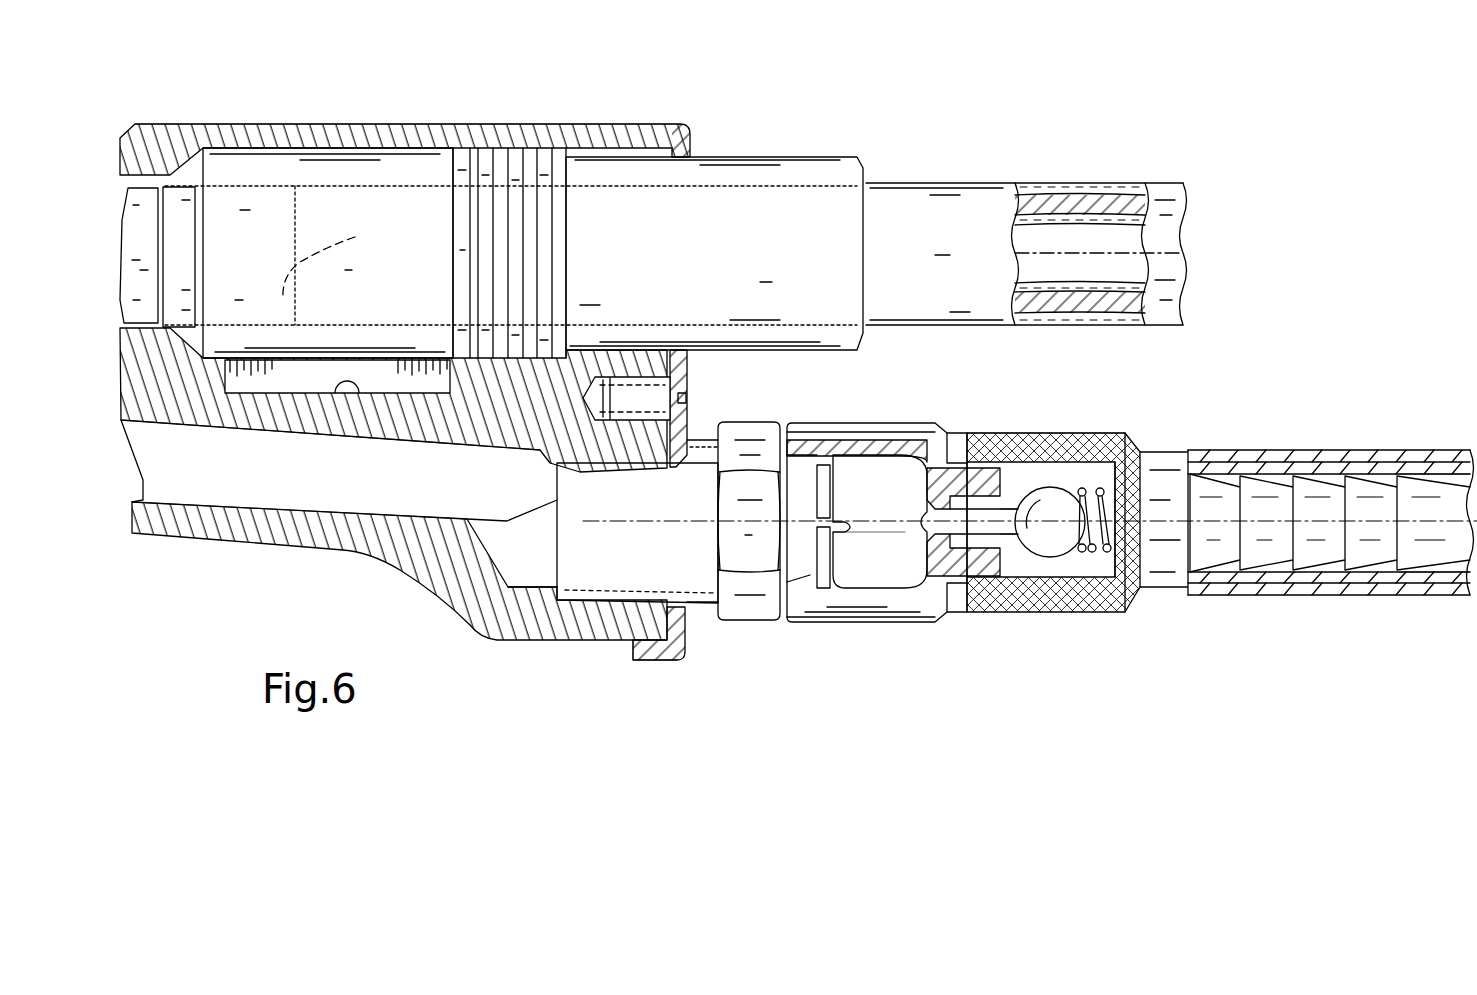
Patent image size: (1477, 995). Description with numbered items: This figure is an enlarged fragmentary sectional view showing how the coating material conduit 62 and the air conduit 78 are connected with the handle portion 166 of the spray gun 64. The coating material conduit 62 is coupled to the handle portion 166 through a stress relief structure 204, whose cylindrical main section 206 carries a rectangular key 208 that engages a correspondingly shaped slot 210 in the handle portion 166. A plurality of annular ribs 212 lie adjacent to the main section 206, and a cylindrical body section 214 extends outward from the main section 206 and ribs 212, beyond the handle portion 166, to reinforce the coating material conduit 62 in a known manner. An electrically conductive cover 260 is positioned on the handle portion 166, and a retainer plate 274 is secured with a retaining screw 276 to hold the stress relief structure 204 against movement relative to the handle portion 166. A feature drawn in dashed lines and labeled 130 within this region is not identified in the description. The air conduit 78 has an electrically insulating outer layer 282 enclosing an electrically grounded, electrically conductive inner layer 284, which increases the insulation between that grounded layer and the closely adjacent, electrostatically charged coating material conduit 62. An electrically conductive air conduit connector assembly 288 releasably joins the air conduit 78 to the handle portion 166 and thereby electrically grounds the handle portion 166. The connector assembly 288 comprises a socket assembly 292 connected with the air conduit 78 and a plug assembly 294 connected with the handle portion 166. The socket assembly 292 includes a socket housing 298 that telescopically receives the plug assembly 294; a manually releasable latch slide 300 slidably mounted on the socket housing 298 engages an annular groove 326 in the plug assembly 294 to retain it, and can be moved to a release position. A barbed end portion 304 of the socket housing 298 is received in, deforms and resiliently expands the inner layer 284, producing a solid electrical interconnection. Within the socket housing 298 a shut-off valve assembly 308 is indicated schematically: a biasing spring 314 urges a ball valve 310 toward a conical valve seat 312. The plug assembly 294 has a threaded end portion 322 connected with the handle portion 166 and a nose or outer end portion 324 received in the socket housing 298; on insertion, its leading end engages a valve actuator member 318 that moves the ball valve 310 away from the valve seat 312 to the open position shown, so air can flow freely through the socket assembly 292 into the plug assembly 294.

The coating material conduit 62 is at (1083, 180).
The spray gun 64 is at (428, 106).
The air conduit 78 is at (1300, 440).
The passage 130 is at (333, 253).
The handle portion 166 is at (252, 122).
The stress relief structure 204 is at (470, 146).
The cylindrical main section 206 is at (228, 165).
The rectangular key 208 is at (293, 375).
The slot 210 is at (358, 394).
The annular ribs 212 is at (563, 148).
The cylindrical body section 214 is at (828, 172).
The electrically conductive cover 260 is at (342, 148).
The retainer plate 274 is at (680, 660).
The retaining screw 276 is at (687, 398).
The electrically insulating outer layer 282 is at (1357, 450).
The electrically conductive inner layer 284 is at (1463, 460).
The air conduit connector assembly 288 is at (1028, 418).
The socket assembly 292 is at (1040, 617).
The plug assembly 294 is at (706, 612).
The socket housing 298 is at (905, 617).
The latch slide 300 is at (866, 562).
The barbed end portion 304 is at (1313, 545).
The shut-off valve assembly 308 is at (1069, 562).
The ball valve 310 is at (1057, 503).
The conical valve seat 312 is at (993, 468).
The biasing spring 314 is at (1132, 443).
The valve actuator member 318 is at (993, 530).
The threaded end portion 322 is at (598, 580).
The nose or outer end portion 324 is at (872, 475).
The annular groove 326 is at (826, 465).